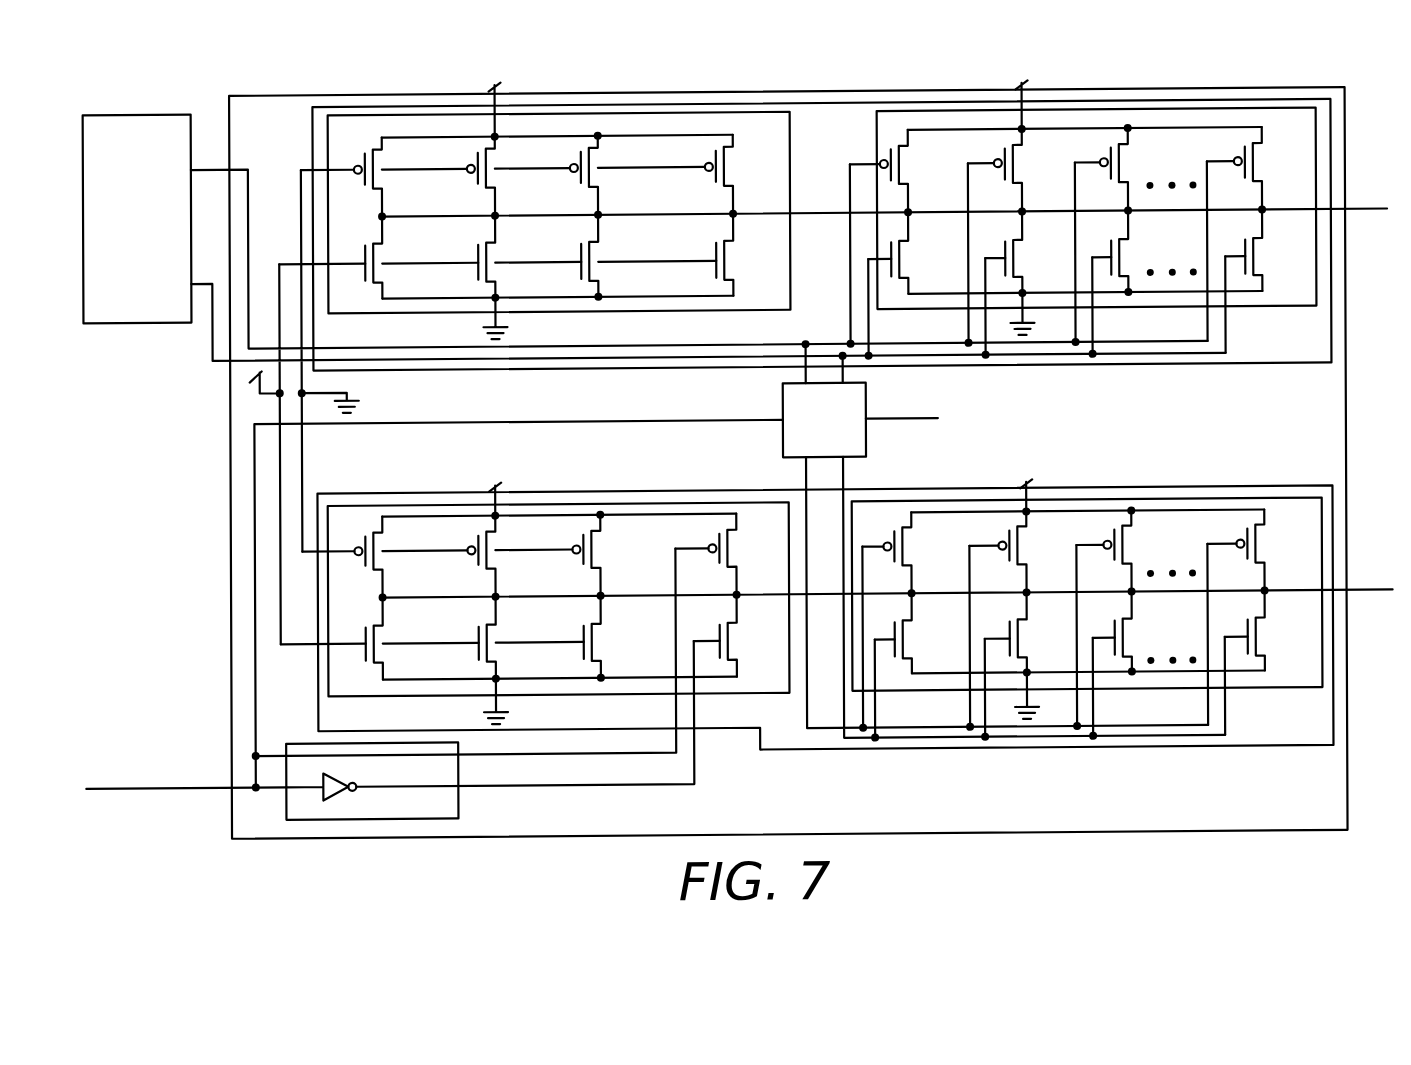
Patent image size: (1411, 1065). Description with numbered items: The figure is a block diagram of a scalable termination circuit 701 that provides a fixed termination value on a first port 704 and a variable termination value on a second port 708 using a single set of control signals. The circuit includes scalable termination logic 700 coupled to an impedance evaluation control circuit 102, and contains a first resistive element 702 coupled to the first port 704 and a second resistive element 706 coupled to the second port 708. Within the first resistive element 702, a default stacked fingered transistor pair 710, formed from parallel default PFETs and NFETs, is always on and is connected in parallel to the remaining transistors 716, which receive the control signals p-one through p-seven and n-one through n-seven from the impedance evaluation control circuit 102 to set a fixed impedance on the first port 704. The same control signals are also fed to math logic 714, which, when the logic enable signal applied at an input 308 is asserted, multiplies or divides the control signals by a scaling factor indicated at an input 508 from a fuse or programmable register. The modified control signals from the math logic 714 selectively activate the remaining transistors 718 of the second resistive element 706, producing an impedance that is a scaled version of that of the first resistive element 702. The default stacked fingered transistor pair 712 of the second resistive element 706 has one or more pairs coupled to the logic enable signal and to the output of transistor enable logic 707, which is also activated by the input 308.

The impedance evaluation control circuit 102 is at (94, 110).
The scalable termination logic 700 is at (787, 79).
The scalable termination circuit 701 is at (208, 415).
The first resistive element 702 is at (1146, 365).
The first port 704 is at (1379, 192).
The second resistive element 706 is at (1229, 752).
The transistor enable logic 707 is at (456, 796).
The second port 708 is at (1378, 573).
The default stacked fingered transistor pair 710 is at (638, 310).
The default stacked fingered transistor pair 712 is at (452, 503).
The math logic 714 is at (783, 446).
The remaining transistors 716 is at (1231, 311).
The remaining transistors 718 is at (1168, 502).
The input 308 is at (176, 784).
The input 508 is at (908, 420).